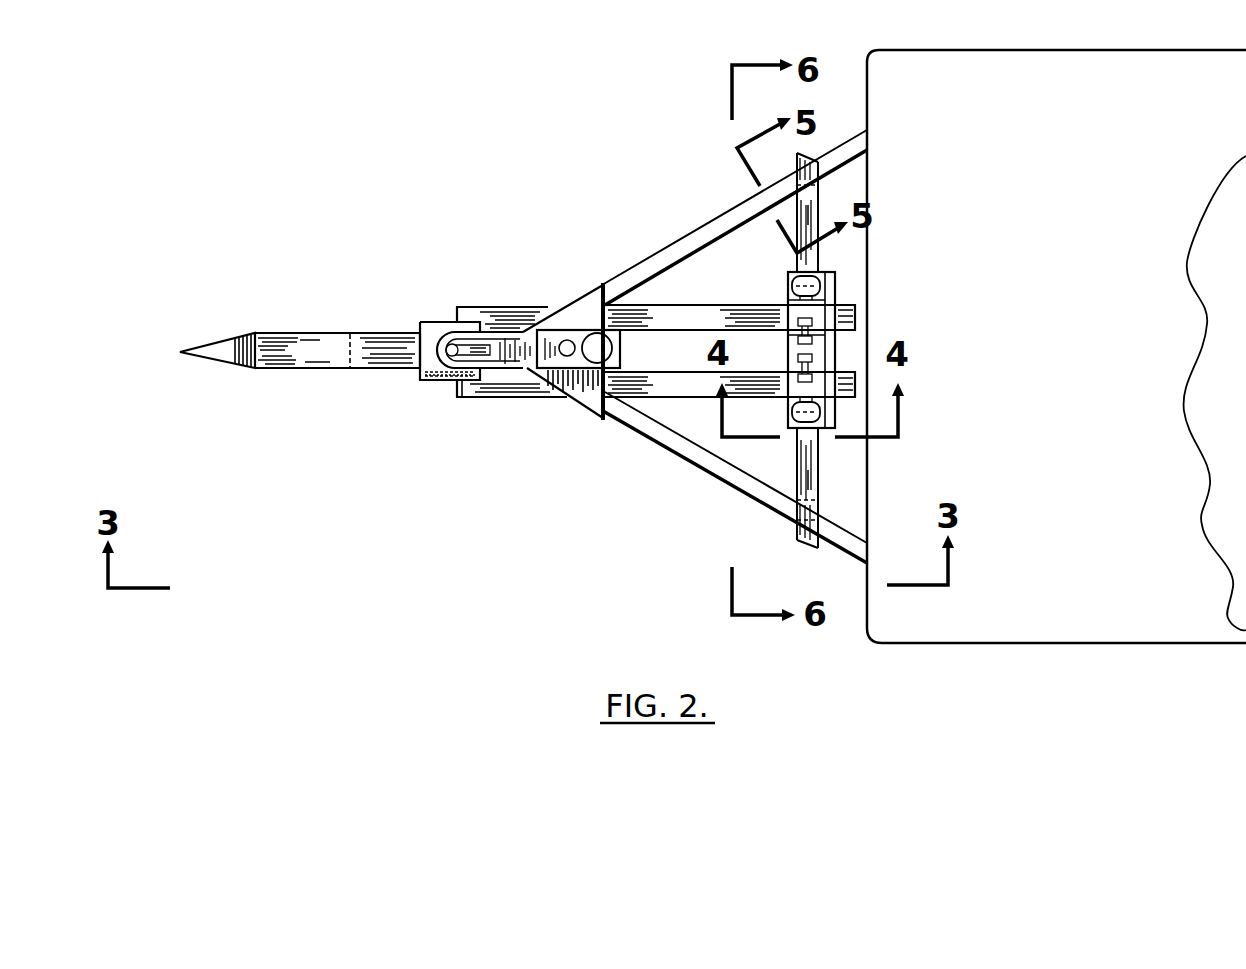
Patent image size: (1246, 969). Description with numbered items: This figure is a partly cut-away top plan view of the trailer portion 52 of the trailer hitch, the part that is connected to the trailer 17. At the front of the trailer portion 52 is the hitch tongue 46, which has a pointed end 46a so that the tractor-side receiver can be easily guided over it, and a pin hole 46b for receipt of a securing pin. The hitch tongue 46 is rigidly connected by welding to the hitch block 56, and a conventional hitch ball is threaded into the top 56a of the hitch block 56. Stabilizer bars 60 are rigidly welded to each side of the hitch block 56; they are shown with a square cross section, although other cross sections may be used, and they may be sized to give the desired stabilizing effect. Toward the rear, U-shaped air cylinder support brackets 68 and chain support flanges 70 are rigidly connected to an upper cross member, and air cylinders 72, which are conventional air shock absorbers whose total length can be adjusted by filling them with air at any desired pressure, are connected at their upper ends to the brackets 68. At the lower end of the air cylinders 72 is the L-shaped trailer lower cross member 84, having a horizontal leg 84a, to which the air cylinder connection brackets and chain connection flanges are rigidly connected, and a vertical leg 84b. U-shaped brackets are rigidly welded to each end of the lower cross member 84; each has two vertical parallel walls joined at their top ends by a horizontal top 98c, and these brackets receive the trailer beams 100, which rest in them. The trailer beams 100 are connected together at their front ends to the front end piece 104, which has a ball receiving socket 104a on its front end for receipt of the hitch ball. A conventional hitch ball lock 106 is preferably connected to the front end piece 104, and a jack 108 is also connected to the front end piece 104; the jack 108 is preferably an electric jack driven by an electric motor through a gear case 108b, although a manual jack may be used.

The trailer 17 is at (1016, 652).
The hitch tongue 46 is at (310, 345).
The pointed end 46a is at (205, 348).
The pin hole 46b is at (350, 370).
The trailer portion 52 is at (523, 298).
The hitch block 56 is at (443, 395).
The top of hitch block 56a is at (425, 322).
The stabilizer bars 60 is at (666, 322).
The U-shaped air cylinder support brackets 68 is at (792, 285).
The chain support flanges 70 is at (796, 340).
The air cylinders 72 is at (828, 278).
The trailer lower cross member 84 is at (828, 500).
The horizontal leg 84a is at (802, 459).
The vertical leg 84b is at (823, 210).
The horizontal top 98c is at (805, 168).
The trailer beams 100 is at (628, 280).
The front end piece 104 is at (592, 418).
The ball receiving socket 104a is at (428, 382).
The hitch ball lock 106 is at (462, 400).
The jack 108 is at (577, 320).
The gear case 108b is at (563, 388).